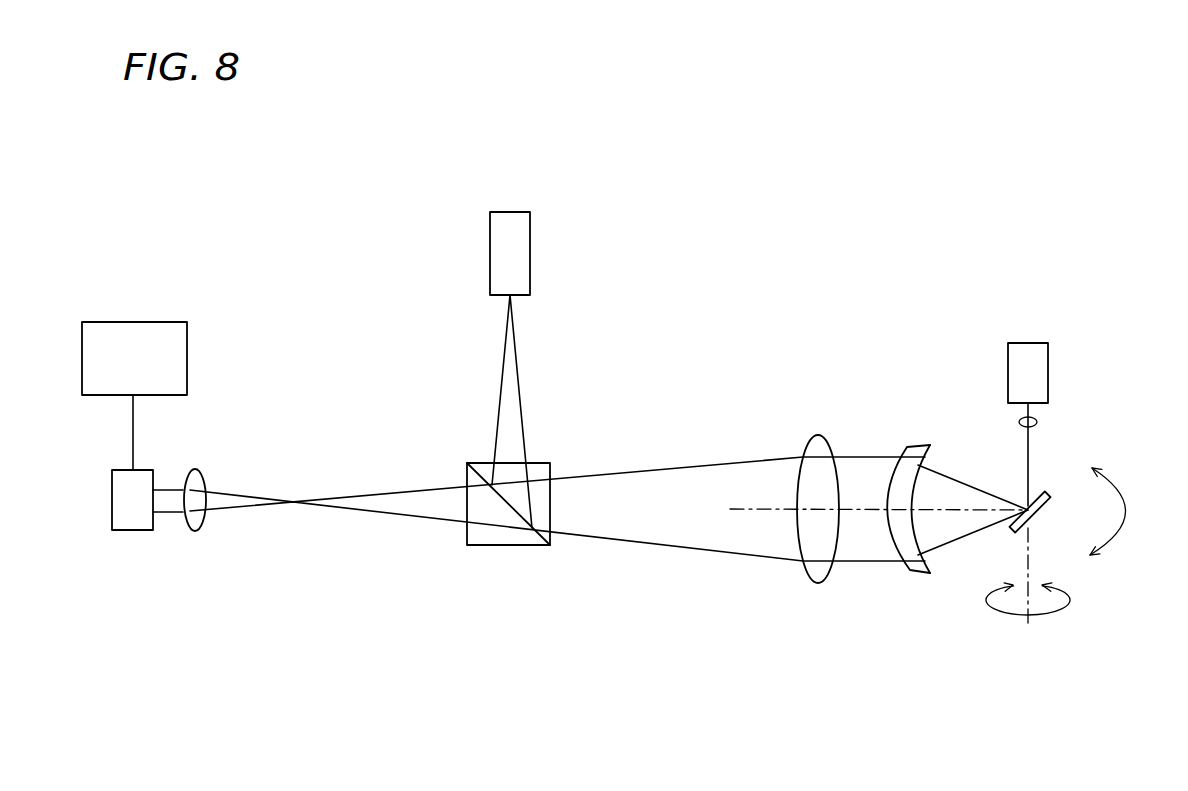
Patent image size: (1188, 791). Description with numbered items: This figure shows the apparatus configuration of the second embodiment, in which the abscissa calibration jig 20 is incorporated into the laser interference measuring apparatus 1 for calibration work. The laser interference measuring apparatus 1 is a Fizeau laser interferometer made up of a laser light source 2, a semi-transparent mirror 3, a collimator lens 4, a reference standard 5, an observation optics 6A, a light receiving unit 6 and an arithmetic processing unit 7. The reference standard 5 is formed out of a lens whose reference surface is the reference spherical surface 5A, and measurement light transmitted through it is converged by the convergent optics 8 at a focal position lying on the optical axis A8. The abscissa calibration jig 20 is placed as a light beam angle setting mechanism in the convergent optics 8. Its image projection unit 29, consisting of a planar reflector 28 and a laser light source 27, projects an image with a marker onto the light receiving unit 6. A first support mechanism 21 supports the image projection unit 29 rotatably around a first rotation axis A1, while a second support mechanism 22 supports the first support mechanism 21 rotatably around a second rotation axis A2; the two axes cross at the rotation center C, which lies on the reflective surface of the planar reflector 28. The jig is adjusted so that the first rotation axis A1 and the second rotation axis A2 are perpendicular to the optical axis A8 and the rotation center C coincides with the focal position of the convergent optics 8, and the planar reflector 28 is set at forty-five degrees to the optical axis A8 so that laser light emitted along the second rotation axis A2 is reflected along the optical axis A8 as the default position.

The laser interference measuring apparatus 1 is at (562, 188).
The laser light source 2 is at (508, 212).
The semi-transparent mirror 3 is at (550, 545).
The collimator lens 4 is at (818, 583).
The reference standard 5 is at (918, 507).
The reference spherical surface 5A is at (930, 445).
The light receiving unit 6 is at (133, 530).
The observation optics 6A is at (195, 532).
The arithmetic processing unit 7 is at (133, 322).
The convergent optics 8 is at (1032, 395).
The abscissa calibration jig 20 is at (1060, 382).
The first support mechanism 21 is at (1135, 498).
The second support mechanism 22 is at (1025, 665).
The laser light source 27 is at (1048, 375).
The planar reflector 28 is at (1042, 493).
The image projection unit 29 is at (1118, 330).
The first rotation axis A1 is at (1050, 518).
The second rotation axis A2 is at (1029, 596).
The optical axis A8 is at (879, 493).
The rotation center C is at (1022, 505).